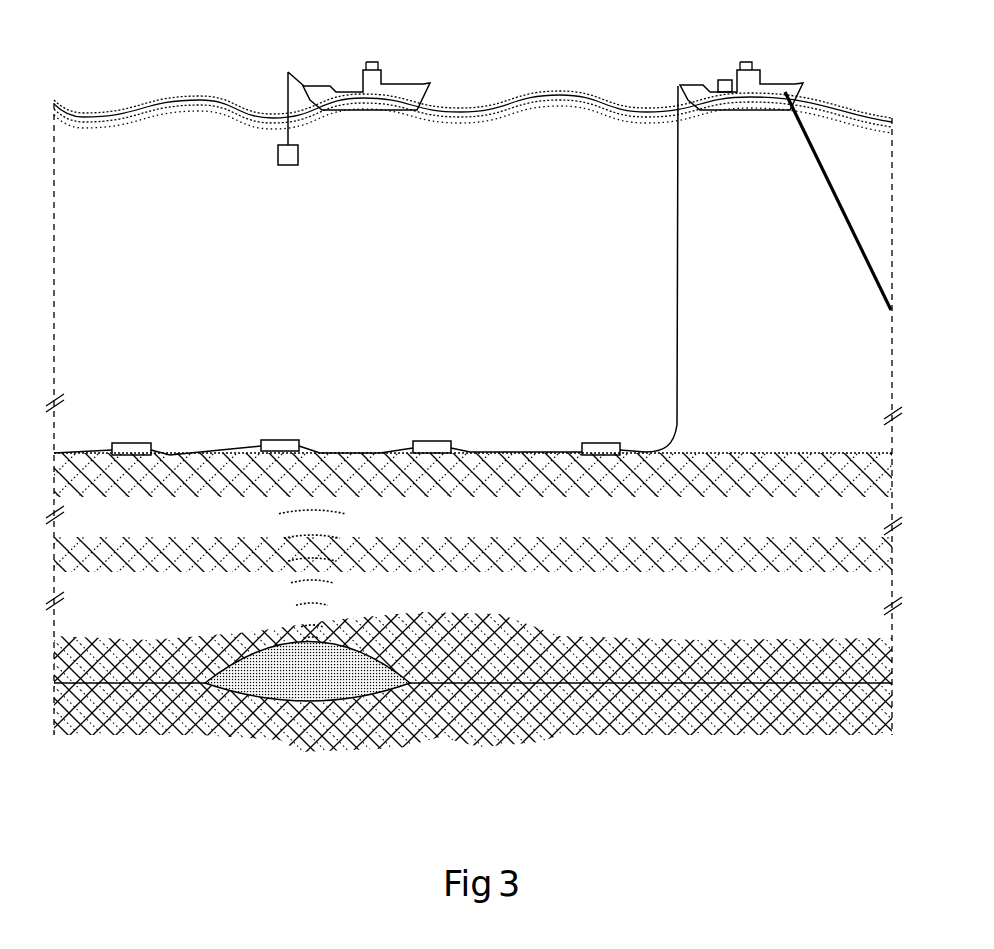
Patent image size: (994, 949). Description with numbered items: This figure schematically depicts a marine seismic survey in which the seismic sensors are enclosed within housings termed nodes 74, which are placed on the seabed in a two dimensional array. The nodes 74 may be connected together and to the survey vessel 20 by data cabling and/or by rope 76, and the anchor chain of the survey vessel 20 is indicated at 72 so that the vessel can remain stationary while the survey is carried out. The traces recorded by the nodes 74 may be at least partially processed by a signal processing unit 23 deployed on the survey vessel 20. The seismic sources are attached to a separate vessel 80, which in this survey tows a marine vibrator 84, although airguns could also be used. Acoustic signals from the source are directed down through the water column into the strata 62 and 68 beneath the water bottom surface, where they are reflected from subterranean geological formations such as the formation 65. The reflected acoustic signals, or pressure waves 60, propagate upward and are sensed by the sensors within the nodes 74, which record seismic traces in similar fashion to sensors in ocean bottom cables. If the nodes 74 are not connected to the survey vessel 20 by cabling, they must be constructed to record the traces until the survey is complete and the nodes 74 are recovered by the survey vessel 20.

The survey vessel 20 is at (796, 84).
The signal processing unit 23 is at (725, 80).
The pressure waves 60 is at (277, 589).
The strata 62 is at (478, 658).
The formation 65 is at (324, 684).
The strata 68 is at (478, 727).
The anchor chain 72 is at (836, 200).
The nodes 74 is at (128, 447).
The rope 76 is at (256, 448).
The separate vessel 80 is at (418, 82).
The marine vibrator 84 is at (298, 156).